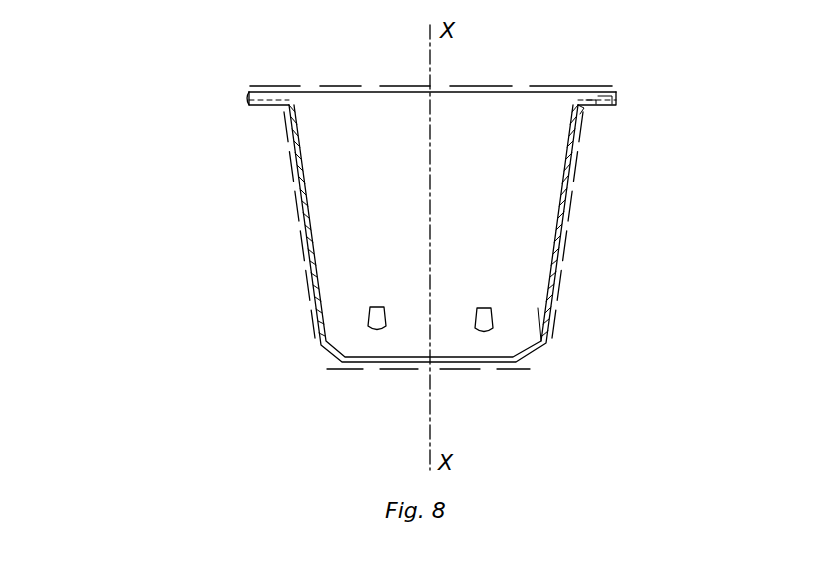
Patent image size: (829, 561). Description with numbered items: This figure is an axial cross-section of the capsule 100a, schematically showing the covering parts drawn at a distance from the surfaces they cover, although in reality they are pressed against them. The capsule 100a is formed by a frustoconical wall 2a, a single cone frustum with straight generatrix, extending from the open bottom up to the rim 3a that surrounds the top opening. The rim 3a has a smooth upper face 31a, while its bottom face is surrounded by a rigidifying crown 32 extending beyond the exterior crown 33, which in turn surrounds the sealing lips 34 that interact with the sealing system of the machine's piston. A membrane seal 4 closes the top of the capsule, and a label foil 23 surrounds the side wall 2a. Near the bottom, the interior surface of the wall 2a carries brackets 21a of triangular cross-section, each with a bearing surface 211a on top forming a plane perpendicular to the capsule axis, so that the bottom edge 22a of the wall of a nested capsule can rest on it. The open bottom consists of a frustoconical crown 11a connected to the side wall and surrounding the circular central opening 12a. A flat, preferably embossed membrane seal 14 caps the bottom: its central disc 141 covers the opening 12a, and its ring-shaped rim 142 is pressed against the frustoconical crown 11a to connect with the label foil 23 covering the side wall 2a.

The capsule 100a is at (175, 145).
The membrane seal 4 is at (330, 85).
The frustoconical wall 2a is at (562, 219).
The label foil 23 is at (300, 238).
The rim 3a is at (693, 115).
The upper face 31a is at (618, 92).
The exterior crown 33 is at (612, 105).
The sealing lips 34 is at (595, 110).
The rigidifying crown 32 is at (580, 115).
The brackets 21a is at (368, 313).
The bearing surface 211a is at (531, 303).
The bottom edge 22a is at (535, 360).
The frustoconical crown 11a is at (322, 352).
The central disc 141 is at (322, 363).
The ring-shaped rim 142 is at (355, 368).
The membrane seal 14 is at (315, 447).
The central opening 12a is at (365, 362).